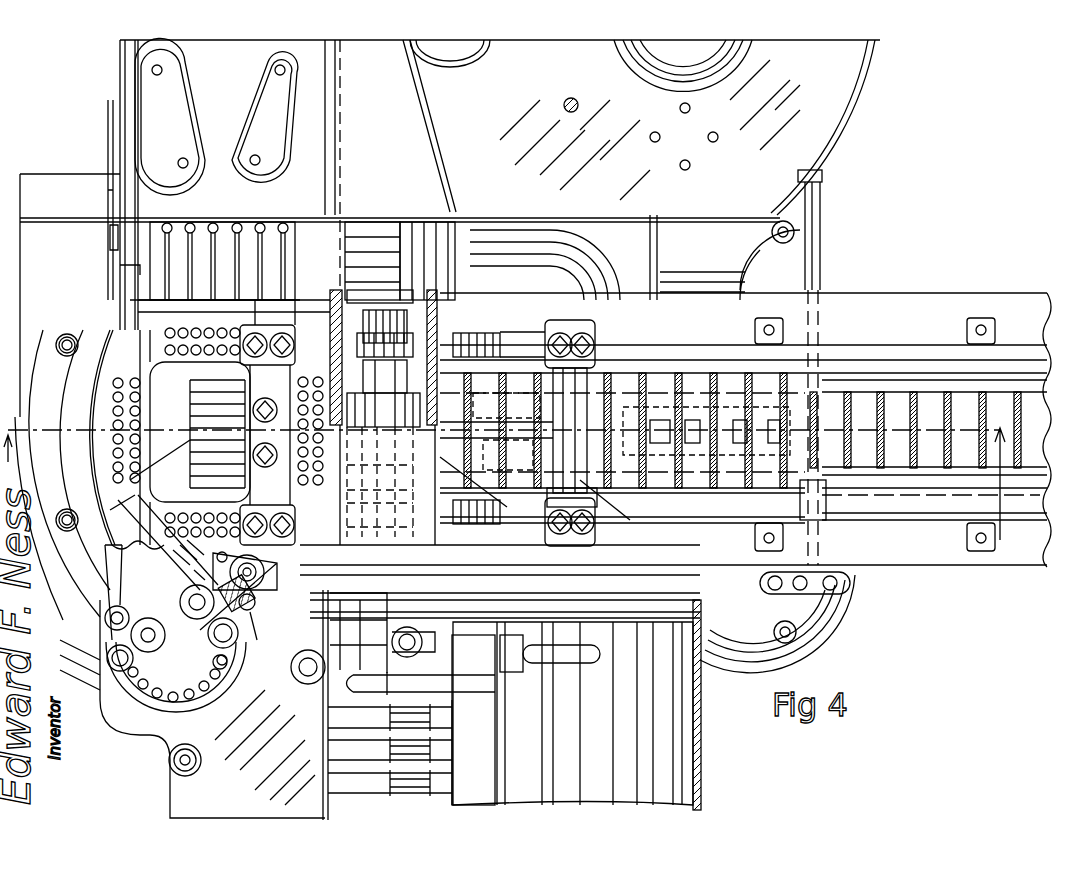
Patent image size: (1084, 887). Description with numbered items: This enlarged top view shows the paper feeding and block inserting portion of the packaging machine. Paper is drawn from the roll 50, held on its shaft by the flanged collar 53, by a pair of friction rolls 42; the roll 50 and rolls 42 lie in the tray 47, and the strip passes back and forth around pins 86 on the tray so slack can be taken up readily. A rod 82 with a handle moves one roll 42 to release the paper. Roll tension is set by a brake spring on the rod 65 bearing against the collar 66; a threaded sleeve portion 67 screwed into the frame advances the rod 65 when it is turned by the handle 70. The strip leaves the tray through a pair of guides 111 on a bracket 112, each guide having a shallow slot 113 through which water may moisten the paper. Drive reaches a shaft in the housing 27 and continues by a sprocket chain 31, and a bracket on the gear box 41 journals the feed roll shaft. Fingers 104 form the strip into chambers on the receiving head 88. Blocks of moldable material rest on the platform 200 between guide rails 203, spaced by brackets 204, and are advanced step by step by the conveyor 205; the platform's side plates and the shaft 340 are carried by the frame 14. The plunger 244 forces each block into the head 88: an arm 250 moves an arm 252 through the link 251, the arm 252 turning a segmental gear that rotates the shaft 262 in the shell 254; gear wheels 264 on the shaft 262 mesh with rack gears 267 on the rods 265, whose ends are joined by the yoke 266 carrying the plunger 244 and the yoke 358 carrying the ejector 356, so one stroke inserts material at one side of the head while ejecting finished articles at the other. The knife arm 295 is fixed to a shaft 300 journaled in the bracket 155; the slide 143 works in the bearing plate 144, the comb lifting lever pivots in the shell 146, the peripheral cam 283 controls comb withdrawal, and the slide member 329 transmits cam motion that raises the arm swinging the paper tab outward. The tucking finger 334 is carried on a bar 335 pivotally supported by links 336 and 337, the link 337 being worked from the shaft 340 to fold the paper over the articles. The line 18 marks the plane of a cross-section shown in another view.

The frame 14 is at (672, 625).
The section line 18 is at (516, 492).
The housing 27 is at (612, 232).
The sprocket chain 31 is at (452, 205).
The gear box 41 is at (360, 235).
The friction rolls 42 is at (452, 60).
The tray 47 is at (840, 115).
The roll of paper 50 is at (658, 76).
The flanged collar 53 is at (640, 60).
The rod 65 is at (820, 225).
The collar 66 is at (824, 176).
The threaded sleeve portion 67 is at (838, 525).
The handle 70 is at (840, 595).
The rod 82 is at (405, 230).
The pins 86 is at (272, 150).
The receiving head 88 is at (113, 380).
The fingers 104 is at (260, 240).
The guides 111 is at (125, 300).
The bracket 112 is at (130, 238).
The slot 113 is at (195, 424).
The slide 143 is at (425, 793).
The bearing plate 144 is at (447, 775).
The shell 146 is at (175, 793).
The bracket 155 is at (225, 668).
The platform 200 is at (905, 300).
The guide rails 203 is at (900, 503).
The brackets 204 is at (980, 555).
The conveyor 205 is at (912, 410).
The plunger 244 is at (440, 430).
The arm 250 is at (565, 665).
The link 251 is at (462, 690).
The arm 252 is at (315, 760).
The shell 254 is at (480, 530).
The shaft 262 is at (540, 545).
The gear wheels 264 is at (500, 545).
The rods 265 is at (590, 560).
The yoke 266 is at (630, 520).
The rack gears 267 is at (535, 325).
The peripheral cam 283 is at (375, 760).
The arm 295 is at (257, 613).
The shaft 300 is at (192, 658).
The slide member 329 is at (347, 717).
The tucking finger 334 is at (113, 583).
The bar 335 is at (110, 585).
The link 336 is at (175, 705).
The link 337 is at (106, 495).
The shaft 340 is at (150, 645).
The ejector 356 is at (113, 457).
The yoke 358 is at (268, 595).